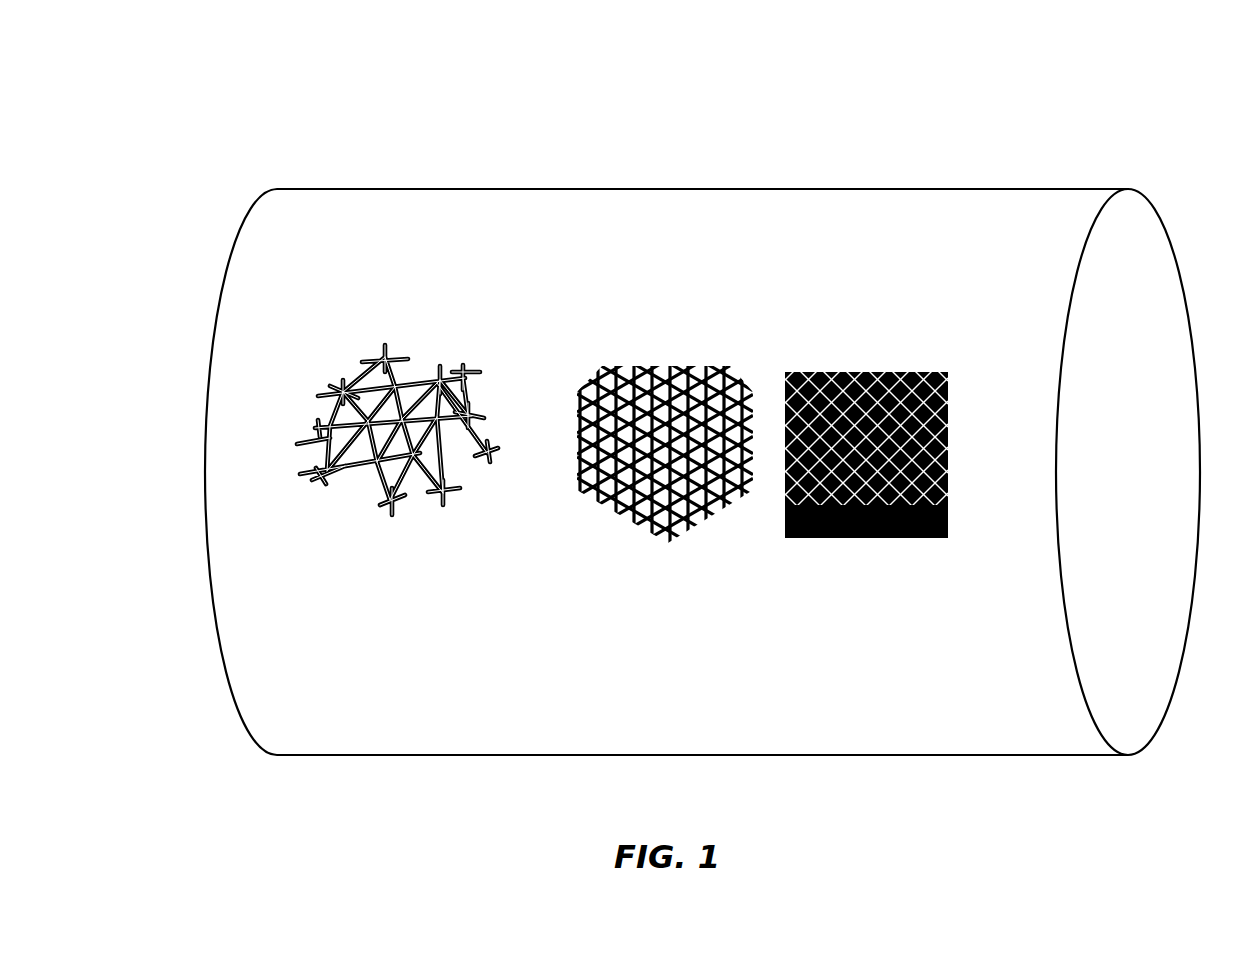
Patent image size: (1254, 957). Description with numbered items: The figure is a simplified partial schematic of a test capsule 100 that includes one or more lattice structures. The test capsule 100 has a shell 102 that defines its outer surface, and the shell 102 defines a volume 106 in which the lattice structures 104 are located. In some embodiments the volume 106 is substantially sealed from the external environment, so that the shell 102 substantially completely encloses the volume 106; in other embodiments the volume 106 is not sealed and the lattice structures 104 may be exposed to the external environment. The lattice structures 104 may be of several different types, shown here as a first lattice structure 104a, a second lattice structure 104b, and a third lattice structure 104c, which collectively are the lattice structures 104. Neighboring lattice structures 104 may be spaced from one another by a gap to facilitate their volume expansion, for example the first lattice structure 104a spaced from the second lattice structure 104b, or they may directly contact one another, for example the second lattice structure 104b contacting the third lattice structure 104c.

The test capsule 100 is at (272, 112).
The shell 102 is at (840, 189).
The lattice structures 104 is at (659, 461).
The first lattice structure 104a is at (436, 525).
The second lattice structure 104b is at (701, 538).
The third lattice structure 104c is at (903, 437).
The volume 106 is at (676, 267).